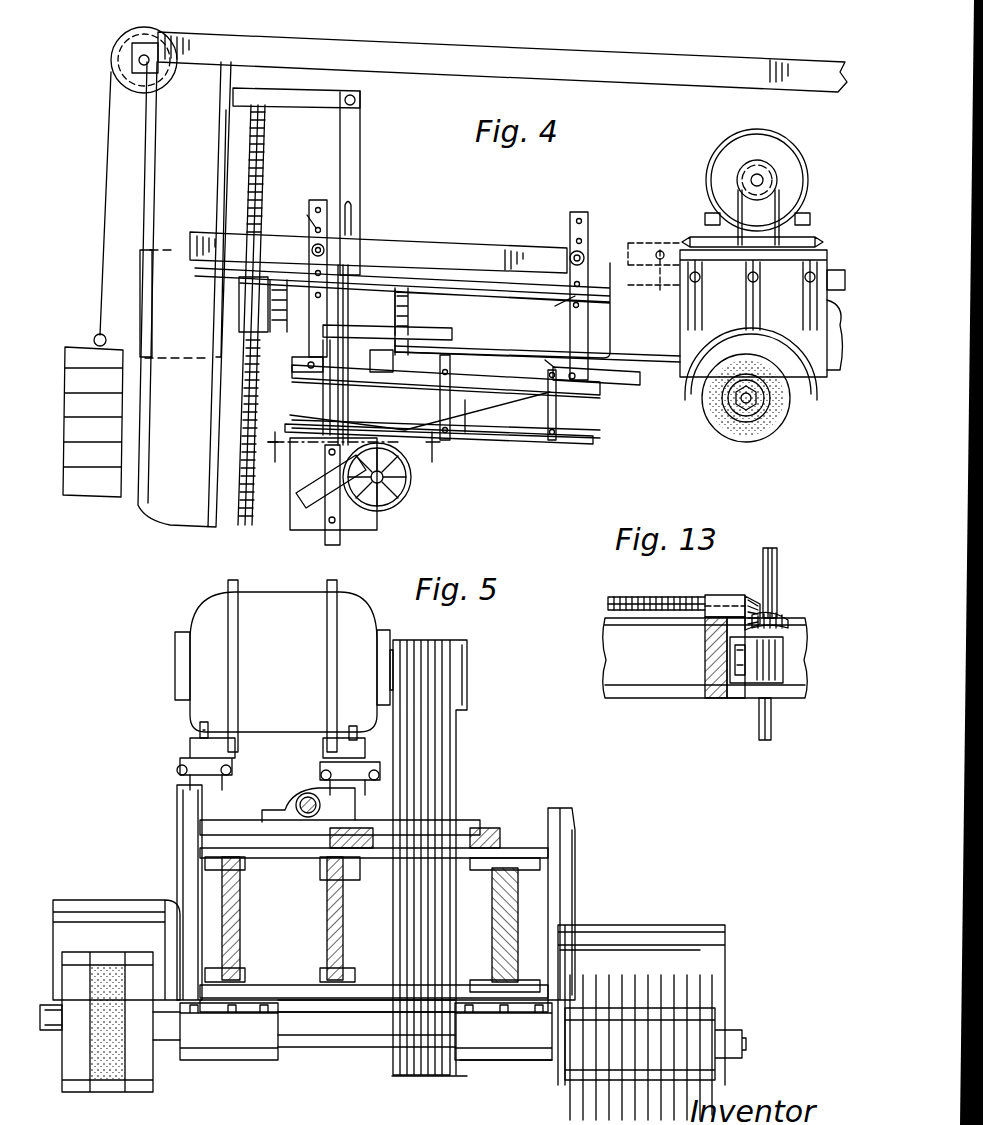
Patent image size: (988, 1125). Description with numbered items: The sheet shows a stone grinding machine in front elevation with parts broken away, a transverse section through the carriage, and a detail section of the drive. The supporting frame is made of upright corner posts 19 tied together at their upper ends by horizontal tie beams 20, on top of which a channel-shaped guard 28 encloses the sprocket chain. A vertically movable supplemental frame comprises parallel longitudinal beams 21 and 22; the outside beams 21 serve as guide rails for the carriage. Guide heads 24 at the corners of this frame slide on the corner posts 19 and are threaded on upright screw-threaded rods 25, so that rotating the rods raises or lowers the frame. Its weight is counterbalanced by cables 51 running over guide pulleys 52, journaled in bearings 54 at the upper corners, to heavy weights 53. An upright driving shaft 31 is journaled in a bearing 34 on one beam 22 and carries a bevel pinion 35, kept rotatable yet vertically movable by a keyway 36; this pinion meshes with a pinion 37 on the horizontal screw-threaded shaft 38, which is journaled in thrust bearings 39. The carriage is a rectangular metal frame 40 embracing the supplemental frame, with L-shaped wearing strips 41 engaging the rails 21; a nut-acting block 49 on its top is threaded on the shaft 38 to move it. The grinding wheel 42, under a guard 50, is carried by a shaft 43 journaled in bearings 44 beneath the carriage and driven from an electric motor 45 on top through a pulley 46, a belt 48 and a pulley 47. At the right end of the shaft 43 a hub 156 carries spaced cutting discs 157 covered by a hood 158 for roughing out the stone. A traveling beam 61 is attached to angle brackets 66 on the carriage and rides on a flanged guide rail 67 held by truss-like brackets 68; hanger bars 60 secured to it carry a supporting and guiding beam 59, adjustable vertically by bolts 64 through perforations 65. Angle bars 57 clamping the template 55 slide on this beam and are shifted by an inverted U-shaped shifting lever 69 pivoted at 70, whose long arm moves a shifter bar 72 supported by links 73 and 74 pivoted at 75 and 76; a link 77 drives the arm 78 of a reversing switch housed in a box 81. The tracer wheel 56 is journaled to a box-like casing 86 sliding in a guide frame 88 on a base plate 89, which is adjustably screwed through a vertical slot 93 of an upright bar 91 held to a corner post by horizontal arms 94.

In FIG. 4, the corner post 19 is at (184, 294).
In FIG. 4, the tie beam 20 is at (248, 70).
In FIG. 4, the longitudinal beam 21 is at (660, 365).
In FIG. 5, the longitudinal beam 21 is at (240, 922).
In FIG. 5, the longitudinal beam 22 is at (328, 920).
In FIG. 4, the guide head 24 is at (224, 322).
In FIG. 4, the screw-threaded rod 25 is at (242, 523).
In FIG. 4, the channel-shaped guard 28 is at (502, 61).
In FIG. 13, the driving shaft 31 is at (778, 568).
In FIG. 13, the bearing 34 is at (783, 666).
In FIG. 13, the bevel pinion 35 is at (790, 620).
In FIG. 13, the keyway 36 is at (772, 718).
In FIG. 13, the bevel pinion 37 is at (756, 596).
In FIG. 4, the screw-threaded shaft 38 is at (836, 270).
In FIG. 13, the screw-threaded shaft 38 is at (668, 597).
In FIG. 5, the screw-threaded shaft 38 is at (302, 818).
In FIG. 13, the thrust bearing 39 is at (718, 595).
In FIG. 4, the carriage frame 40 is at (761, 313).
In FIG. 5, the carriage frame 40 is at (512, 824).
In FIG. 5, the wearing strip 41 is at (198, 850).
In FIG. 5, the grinding wheel 42 is at (90, 1085).
In FIG. 4, the shaft 43 is at (735, 410).
In FIG. 5, the shaft 43 is at (320, 1040).
In FIG. 5, the bearing 44 is at (238, 1062).
In FIG. 4, the electric motor 45 is at (788, 156).
In FIG. 5, the electric motor 45 is at (284, 687).
In FIG. 4, the pulley 46 is at (770, 183).
In FIG. 5, the pulley 46 is at (468, 680).
In FIG. 5, the pulley 47 is at (372, 1060).
In FIG. 4, the belt 48 is at (780, 210).
In FIG. 5, the belt 48 is at (452, 760).
In FIG. 5, the nut-acting block 49 is at (290, 800).
In FIG. 5, the guard 50 is at (110, 900).
In FIG. 4, the cable 51 is at (108, 150).
In FIG. 4, the guide pulley 52 is at (112, 60).
In FIG. 4, the weight 53 is at (93, 415).
In FIG. 4, the bearing 54 is at (146, 55).
In FIG. 4, the template 55 is at (464, 440).
In FIG. 4, the tracer wheel 56 is at (400, 500).
In FIG. 4, the angle bar 57 is at (498, 400).
In FIG. 4, the supporting and guiding beam 59 is at (585, 380).
In FIG. 4, the hanger bar 60 is at (318, 200).
In FIG. 4, the traveling beam 61 is at (370, 251).
In FIG. 4, the nut-equipped bolt 64 is at (308, 366).
In FIG. 4, the perforation 65 is at (428, 260).
In FIG. 4, the angle bracket 66 is at (612, 300).
In FIG. 4, the guide rail 67 is at (232, 250).
In FIG. 4, the truss-like bracket 68 is at (286, 300).
In FIG. 4, the shifting lever 69 is at (440, 403).
In FIG. 4, the pivot 70 is at (456, 365).
In FIG. 4, the shifter bar 72 is at (484, 438).
In FIG. 4, the link-like lever 73 is at (558, 411).
In FIG. 4, the link-like lever 74 is at (350, 402).
In FIG. 4, the pivot 75 is at (548, 360).
In FIG. 4, the pivot 76 is at (324, 380).
In FIG. 4, the link 77 is at (362, 330).
In FIG. 4, the projecting arm 78 is at (392, 343).
In FIG. 4, the box 81 is at (383, 361).
In FIG. 4, the box-like casing 86 is at (308, 490).
In FIG. 4, the guide frame 88 is at (342, 505).
In FIG. 4, the base plate 89 is at (296, 525).
In FIG. 4, the upright bar 91 is at (344, 160).
In FIG. 4, the vertical slot 93 is at (352, 213).
In FIG. 4, the horizontal arm 94 is at (298, 100).
In FIG. 4, the hub 156 is at (770, 430).
In FIG. 5, the hub 156 is at (730, 1018).
In FIG. 4, the cutting disc 157 is at (757, 435).
In FIG. 5, the cutting disc 157 is at (700, 985).
In FIG. 4, the hood 158 is at (800, 400).
In FIG. 5, the hood 158 is at (658, 925).